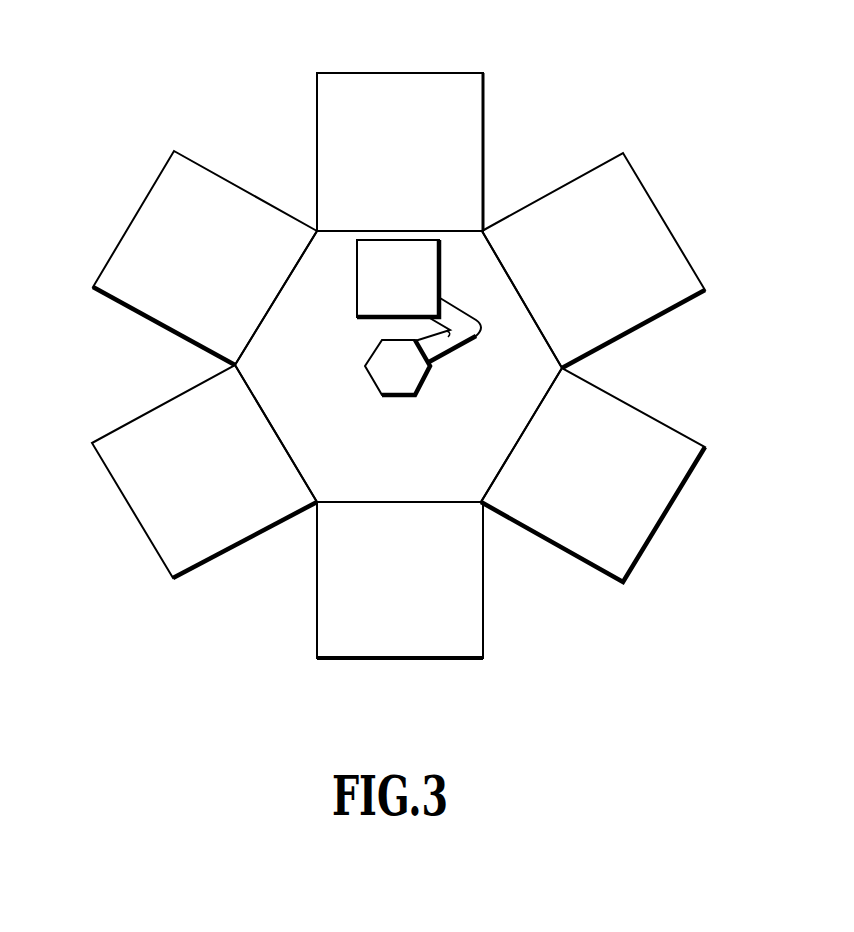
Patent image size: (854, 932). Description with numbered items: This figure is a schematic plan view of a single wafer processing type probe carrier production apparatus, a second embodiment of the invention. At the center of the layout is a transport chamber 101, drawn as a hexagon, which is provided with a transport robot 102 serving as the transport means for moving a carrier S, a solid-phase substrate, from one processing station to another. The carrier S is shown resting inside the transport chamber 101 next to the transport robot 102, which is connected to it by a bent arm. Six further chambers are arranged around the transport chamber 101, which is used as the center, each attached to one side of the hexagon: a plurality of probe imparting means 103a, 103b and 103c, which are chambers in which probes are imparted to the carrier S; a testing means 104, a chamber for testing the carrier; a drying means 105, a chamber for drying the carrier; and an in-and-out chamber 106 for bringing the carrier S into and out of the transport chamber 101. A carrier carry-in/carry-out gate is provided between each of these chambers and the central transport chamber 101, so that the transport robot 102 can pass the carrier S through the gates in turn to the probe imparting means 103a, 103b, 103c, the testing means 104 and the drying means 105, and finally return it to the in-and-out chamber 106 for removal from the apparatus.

The transport chamber 101 is at (535, 350).
The transport robot 102 is at (453, 357).
The probe imparting means 103a is at (132, 220).
The probe imparting means 103b is at (405, 73).
The probe imparting means 103c is at (712, 210).
The testing means 104 is at (130, 510).
The drying means 105 is at (668, 508).
The in-and-out chamber 106 is at (400, 660).
The carrier S is at (398, 256).